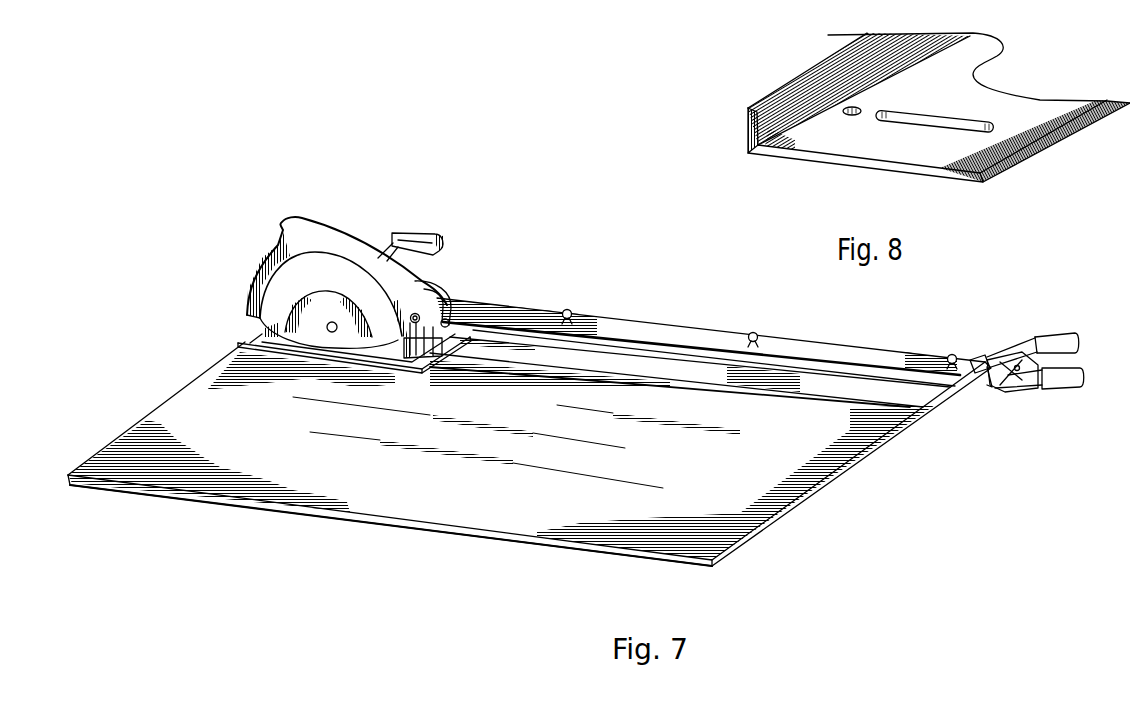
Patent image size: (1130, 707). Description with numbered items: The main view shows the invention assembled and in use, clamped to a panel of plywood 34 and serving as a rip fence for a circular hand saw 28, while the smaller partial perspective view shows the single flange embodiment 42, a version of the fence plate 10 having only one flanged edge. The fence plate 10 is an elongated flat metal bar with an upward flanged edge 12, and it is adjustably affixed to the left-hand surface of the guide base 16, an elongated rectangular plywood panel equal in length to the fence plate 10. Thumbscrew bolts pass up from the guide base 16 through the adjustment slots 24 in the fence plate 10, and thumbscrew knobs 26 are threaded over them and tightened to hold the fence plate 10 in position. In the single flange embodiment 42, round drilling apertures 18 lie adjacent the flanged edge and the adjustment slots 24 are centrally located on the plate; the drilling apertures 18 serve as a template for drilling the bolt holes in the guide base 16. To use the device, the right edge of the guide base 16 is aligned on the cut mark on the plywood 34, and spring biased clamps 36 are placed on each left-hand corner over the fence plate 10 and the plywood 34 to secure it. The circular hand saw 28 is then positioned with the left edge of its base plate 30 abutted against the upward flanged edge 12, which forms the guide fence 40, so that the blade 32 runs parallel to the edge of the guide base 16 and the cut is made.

In FIG. 7, the fence plate 10 is at (667, 340).
In FIG. 7, the upward flanged edge 12 is at (502, 323).
In FIG. 8, the upward flanged edge 12 is at (822, 63).
In FIG. 7, the guide base 16 is at (707, 373).
In FIG. 8, the drilling apertures 18 is at (765, 151).
In FIG. 8, the adjustment slots 24 is at (843, 115).
In FIG. 7, the thumbscrew knobs 26 is at (568, 310).
In FIG. 7, the circular hand saw 28 is at (307, 263).
In FIG. 7, the base plate 30 is at (252, 342).
In FIG. 7, the blade 32 is at (323, 307).
In FIG. 7, the plywood 34 is at (518, 502).
In FIG. 7, the spring biased clamps 36 is at (1080, 335).
In FIG. 7, the guide fence 40 is at (793, 367).
In FIG. 8, the guide fence 40 is at (745, 123).
In FIG. 8, the single flange embodiment 42 is at (1022, 112).